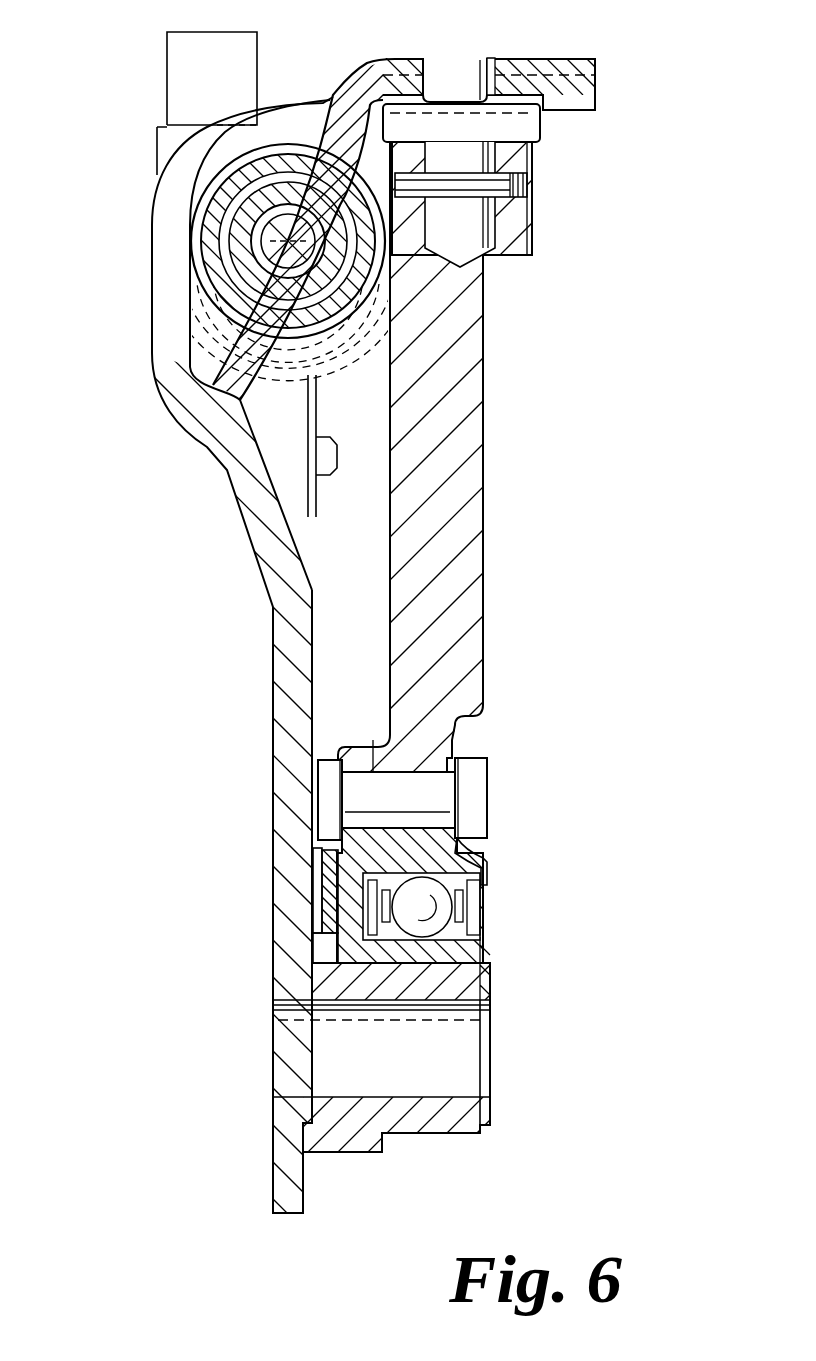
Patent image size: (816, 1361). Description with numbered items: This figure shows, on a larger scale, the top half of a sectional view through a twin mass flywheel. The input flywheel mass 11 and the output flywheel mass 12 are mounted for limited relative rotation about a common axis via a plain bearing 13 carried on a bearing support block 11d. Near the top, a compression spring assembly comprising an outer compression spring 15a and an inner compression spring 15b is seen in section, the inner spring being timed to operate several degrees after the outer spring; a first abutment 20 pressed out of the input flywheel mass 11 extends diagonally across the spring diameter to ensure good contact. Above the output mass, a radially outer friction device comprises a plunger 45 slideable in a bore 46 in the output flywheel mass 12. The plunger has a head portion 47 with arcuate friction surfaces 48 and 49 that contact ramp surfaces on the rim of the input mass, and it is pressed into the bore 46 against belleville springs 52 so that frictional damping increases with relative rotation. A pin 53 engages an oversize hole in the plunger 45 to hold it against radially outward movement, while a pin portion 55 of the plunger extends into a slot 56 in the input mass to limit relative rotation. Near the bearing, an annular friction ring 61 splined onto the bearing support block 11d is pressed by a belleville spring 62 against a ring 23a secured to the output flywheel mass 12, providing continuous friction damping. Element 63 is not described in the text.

The input flywheel mass 11 is at (293, 793).
The bearing support block 11d is at (447, 988).
The output flywheel mass 12 is at (463, 525).
The plain bearing 13 is at (453, 952).
The outer compression spring 15a is at (215, 220).
The inner compression spring 15b is at (237, 252).
The first abutment 20 is at (230, 348).
The ring 23a is at (440, 813).
The plunger 45 is at (485, 265).
The bore 46 is at (533, 257).
The head portion 47 is at (542, 133).
The arcuate friction surface 48 is at (577, 107).
The arcuate friction surface 49 is at (539, 107).
The belleville springs 52 is at (532, 155).
The pin 53 is at (532, 200).
The pin portion 55 is at (442, 82).
The slot 56 is at (498, 80).
The annular friction ring 61 is at (310, 868).
The belleville spring 62 is at (310, 945).
The seal 63 is at (307, 898).